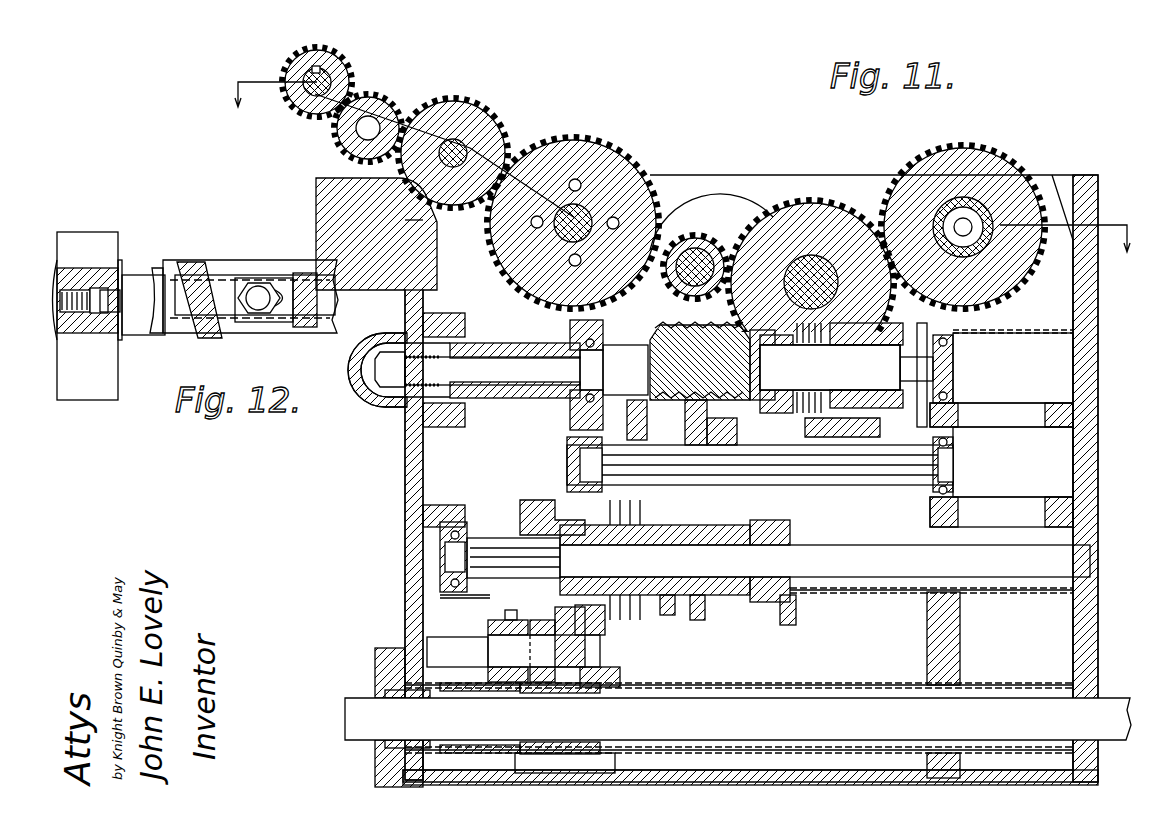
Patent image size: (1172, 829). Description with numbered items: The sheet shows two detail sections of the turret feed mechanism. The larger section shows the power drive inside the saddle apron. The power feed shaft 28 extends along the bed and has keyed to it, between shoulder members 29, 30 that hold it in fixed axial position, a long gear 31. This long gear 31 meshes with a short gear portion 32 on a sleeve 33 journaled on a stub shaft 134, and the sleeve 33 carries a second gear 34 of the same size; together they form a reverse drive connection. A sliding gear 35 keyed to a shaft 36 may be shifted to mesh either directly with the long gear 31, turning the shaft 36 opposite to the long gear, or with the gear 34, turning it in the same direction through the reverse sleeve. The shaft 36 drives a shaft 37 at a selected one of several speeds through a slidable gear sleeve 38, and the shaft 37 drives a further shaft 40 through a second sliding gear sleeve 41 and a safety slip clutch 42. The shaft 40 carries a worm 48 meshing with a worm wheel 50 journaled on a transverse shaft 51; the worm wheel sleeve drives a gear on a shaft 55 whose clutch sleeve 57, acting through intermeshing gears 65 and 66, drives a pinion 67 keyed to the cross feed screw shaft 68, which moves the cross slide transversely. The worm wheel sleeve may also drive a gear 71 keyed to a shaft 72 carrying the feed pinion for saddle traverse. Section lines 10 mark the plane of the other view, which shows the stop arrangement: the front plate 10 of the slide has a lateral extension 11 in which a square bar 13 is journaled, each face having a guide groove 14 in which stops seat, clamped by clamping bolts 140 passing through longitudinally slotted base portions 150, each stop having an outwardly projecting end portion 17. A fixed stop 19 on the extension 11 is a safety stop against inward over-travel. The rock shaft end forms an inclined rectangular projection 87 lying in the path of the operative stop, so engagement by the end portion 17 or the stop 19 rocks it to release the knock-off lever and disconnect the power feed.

In FIG. 11, the front plate 10 is at (684, 180).
In FIG. 12, the lateral extension 11 is at (88, 235).
In FIG. 12, the bar 13 is at (160, 268).
In FIG. 12, the guide groove 14 is at (165, 312).
In FIG. 12, the end portion 17 is at (318, 298).
In FIG. 12, the fixed stop 19 is at (125, 278).
In FIG. 11, the power feed shaft 28 is at (738, 719).
In FIG. 11, the shoulder member 29 is at (427, 678).
In FIG. 11, the shoulder member 30 is at (615, 680).
In FIG. 11, the long gear 31 is at (555, 742).
In FIG. 11, the short gear portion 32 is at (562, 628).
In FIG. 11, the sleeve 33 is at (502, 622).
In FIG. 11, the second gear 34 is at (497, 630).
In FIG. 11, the sliding gear 35 is at (521, 520).
In FIG. 11, the shaft 36 is at (765, 562).
In FIG. 11, the shaft 37 is at (920, 458).
In FIG. 11, the slidable gear sleeve 38 is at (730, 387).
In FIG. 11, the shaft 40 is at (846, 374).
In FIG. 11, the second sliding gear sleeve 41 is at (880, 432).
In FIG. 11, the safety slip clutch 42 is at (835, 328).
In FIG. 11, the worm 48 is at (688, 380).
In FIG. 11, the worm wheel 50 is at (728, 192).
In FIG. 11, the transverse shaft 51 is at (695, 248).
In FIG. 11, the shaft 55 is at (597, 197).
In FIG. 11, the sleeve 57 is at (563, 137).
In FIG. 11, the gear 65 is at (548, 52).
In FIG. 11, the gear 66 is at (385, 100).
In FIG. 11, the pinion 67 is at (340, 62).
In FIG. 11, the cross feed screw shaft 68 is at (313, 100).
In FIG. 11, the gear 71 is at (833, 207).
In FIG. 11, the shaft 72 is at (810, 268).
In FIG. 12, the projection 87 is at (200, 268).
In FIG. 11, the stub shaft 134 is at (505, 650).
In FIG. 12, the clamping bolt 140 is at (258, 290).
In FIG. 12, the slotted base portion 150 is at (282, 325).